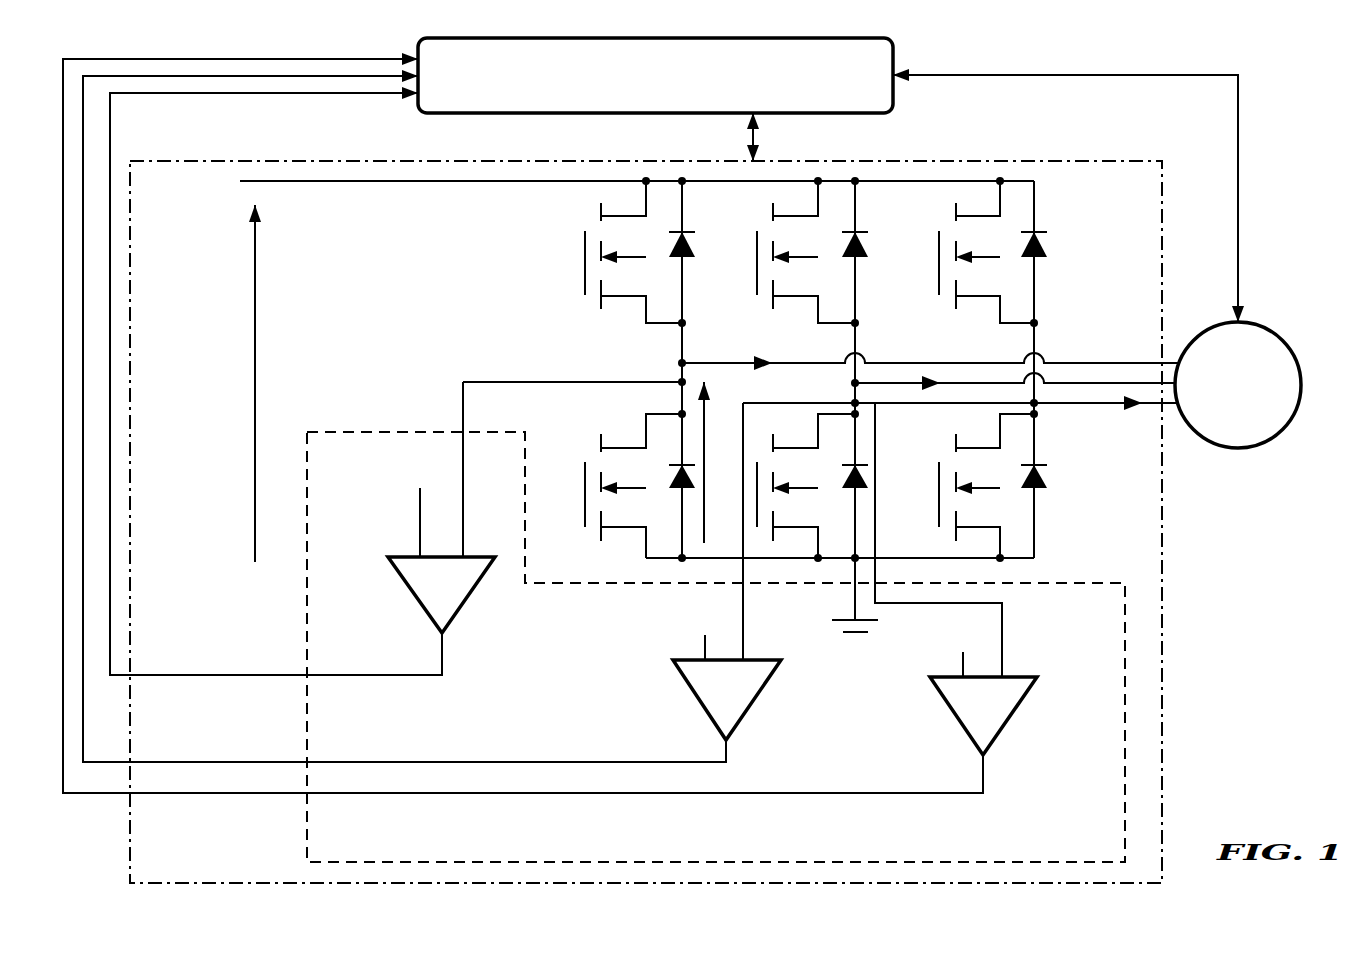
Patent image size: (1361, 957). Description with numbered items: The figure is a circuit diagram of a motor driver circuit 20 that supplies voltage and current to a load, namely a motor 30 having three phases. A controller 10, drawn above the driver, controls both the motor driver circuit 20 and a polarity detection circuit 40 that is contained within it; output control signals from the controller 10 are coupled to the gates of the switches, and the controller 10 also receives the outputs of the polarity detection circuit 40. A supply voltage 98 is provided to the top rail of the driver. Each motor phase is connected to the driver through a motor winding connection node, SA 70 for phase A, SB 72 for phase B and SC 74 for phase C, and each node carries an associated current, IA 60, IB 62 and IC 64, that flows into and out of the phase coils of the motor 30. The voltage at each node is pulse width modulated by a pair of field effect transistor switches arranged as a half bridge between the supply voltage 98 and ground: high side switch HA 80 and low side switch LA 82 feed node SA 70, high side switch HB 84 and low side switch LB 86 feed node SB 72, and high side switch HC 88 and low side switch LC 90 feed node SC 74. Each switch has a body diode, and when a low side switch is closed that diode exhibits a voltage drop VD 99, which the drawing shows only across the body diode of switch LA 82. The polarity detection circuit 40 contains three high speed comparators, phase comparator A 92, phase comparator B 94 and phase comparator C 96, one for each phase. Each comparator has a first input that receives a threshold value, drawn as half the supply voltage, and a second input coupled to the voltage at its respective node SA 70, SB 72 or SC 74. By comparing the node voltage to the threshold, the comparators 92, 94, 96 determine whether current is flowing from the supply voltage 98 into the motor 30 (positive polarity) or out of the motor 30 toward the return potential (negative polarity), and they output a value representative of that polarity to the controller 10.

The controller 10 is at (631, 102).
The motor driver circuit 20 is at (203, 869).
The motor 30 is at (1224, 416).
The polarity detection circuit 40 is at (451, 856).
The current IA 60 is at (704, 363).
The current IB 62 is at (902, 382).
The current IC 64 is at (1141, 450).
The motor winding connection node SA 70 is at (641, 355).
The motor winding connection node SB 72 is at (805, 380).
The motor winding connection node SC 74 is at (1094, 462).
The high side switch HA 80 is at (566, 289).
The low side switch LA 82 is at (573, 522).
The high side switch HB 84 is at (745, 289).
The low side switch LB 86 is at (766, 520).
The high side switch HC 88 is at (927, 289).
The low side switch LC 90 is at (929, 522).
The phase comparator A 92 is at (486, 692).
The phase comparator B 94 is at (774, 776).
The phase comparator C 96 is at (1019, 806).
The supply voltage Vsupply 98 is at (179, 422).
The voltage drop VD 99 is at (724, 463).